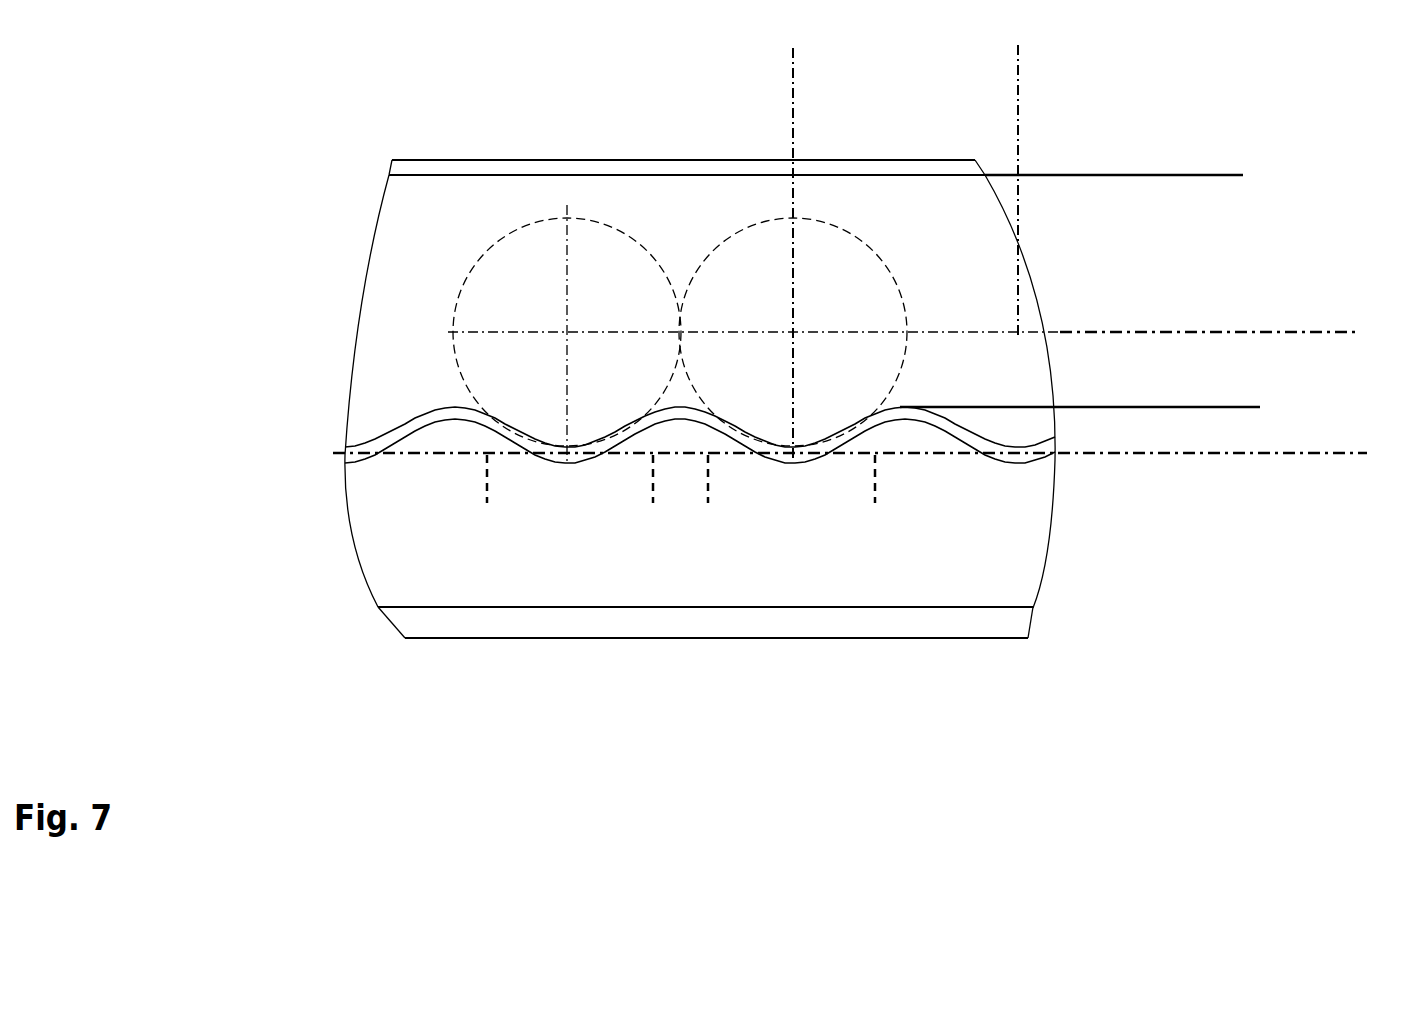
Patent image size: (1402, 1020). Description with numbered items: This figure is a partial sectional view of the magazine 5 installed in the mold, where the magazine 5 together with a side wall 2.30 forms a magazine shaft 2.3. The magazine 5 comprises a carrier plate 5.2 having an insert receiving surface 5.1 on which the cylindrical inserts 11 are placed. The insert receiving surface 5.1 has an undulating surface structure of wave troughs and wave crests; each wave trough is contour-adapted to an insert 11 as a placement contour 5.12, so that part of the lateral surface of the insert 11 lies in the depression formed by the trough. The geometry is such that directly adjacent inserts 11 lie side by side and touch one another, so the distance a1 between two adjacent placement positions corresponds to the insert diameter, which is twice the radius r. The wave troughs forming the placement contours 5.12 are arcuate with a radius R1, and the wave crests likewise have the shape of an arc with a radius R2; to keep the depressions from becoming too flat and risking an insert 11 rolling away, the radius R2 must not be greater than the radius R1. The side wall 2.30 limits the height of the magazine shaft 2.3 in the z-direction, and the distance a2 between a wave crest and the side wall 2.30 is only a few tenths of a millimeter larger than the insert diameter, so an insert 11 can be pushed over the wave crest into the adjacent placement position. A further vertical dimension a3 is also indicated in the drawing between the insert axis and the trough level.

The magazine shaft 2.3 is at (338, 240).
The side wall 2.30 is at (403, 157).
The insert 11 is at (735, 232).
The magazine 5 is at (298, 456).
The insert receiving surface 5.1 is at (345, 450).
The carrier plate 5.2 is at (705, 596).
The placement contour 5.12 is at (487, 503).
The insert radius r is at (555, 322).
The wave trough radius R1 is at (930, 542).
The wave crest radius R2 is at (880, 410).
The distance between adjacent placement positions a1 is at (1018, 68).
The distance between wave crest and side wall a2 is at (1234, 407).
The height dimension a3 is at (1341, 332).